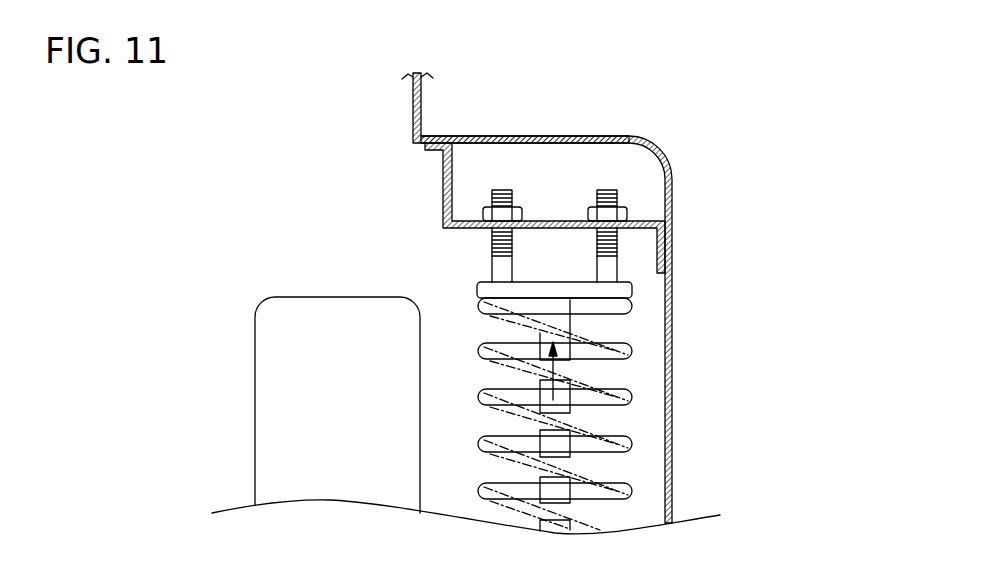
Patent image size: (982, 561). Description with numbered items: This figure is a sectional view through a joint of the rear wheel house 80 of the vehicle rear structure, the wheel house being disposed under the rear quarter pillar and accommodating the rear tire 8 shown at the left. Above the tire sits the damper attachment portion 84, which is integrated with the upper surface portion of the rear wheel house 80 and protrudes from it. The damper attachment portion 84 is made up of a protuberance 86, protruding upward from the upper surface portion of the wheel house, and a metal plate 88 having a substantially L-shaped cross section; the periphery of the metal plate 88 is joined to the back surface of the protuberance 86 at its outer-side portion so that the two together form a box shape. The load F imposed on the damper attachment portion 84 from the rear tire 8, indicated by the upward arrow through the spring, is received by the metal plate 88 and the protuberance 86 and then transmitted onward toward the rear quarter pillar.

The rear tire 8 is at (340, 296).
The rear wheel house 80 is at (667, 166).
The damper attachment portion 84 is at (589, 297).
The protuberance 86 is at (540, 136).
The metal plate 88 is at (726, 151).
The load F is at (560, 368).